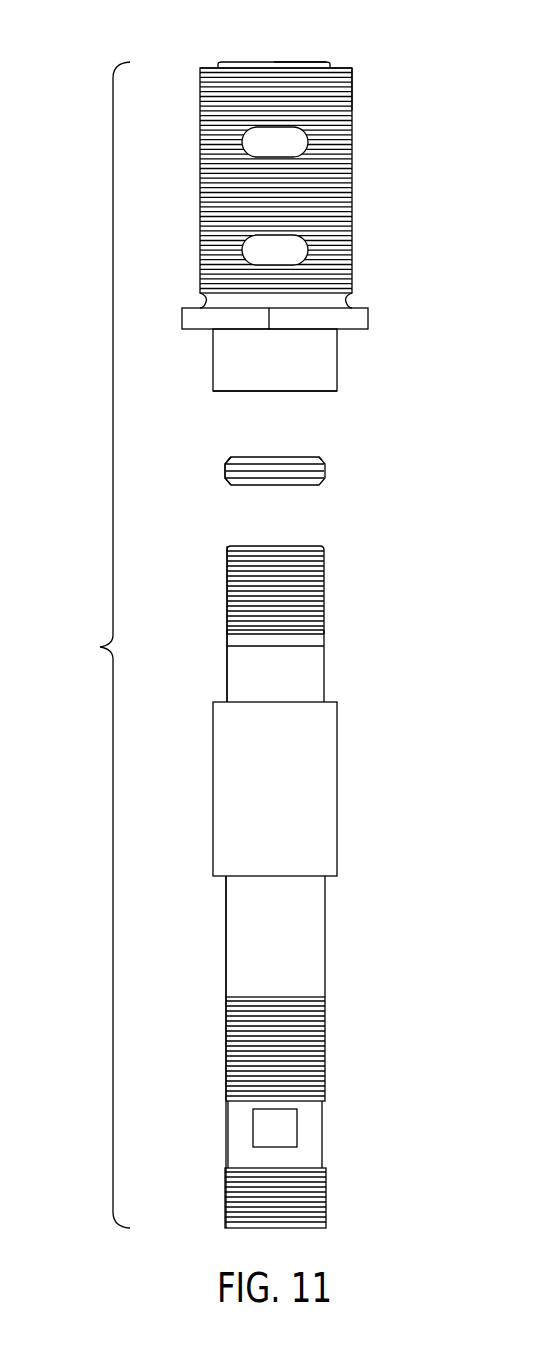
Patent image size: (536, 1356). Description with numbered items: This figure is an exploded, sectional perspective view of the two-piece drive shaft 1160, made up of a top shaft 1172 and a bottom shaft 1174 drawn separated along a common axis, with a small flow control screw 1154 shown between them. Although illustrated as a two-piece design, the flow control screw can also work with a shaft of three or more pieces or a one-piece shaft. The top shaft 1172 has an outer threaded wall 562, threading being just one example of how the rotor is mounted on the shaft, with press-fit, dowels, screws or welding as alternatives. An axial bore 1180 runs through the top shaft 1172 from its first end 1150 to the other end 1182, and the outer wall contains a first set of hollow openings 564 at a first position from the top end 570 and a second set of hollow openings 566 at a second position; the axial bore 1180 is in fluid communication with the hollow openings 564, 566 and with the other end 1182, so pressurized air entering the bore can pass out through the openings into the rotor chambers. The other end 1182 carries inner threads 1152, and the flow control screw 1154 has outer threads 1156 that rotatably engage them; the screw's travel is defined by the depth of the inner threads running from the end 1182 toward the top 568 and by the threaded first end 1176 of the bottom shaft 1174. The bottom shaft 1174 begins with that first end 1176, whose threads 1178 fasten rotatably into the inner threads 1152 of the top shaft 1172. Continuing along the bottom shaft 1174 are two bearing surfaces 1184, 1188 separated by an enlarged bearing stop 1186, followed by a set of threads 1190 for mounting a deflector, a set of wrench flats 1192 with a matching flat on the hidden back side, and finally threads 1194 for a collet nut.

The first end 1150 is at (342, 68).
The inner threads 1152 is at (293, 393).
The flow control screw 1154 is at (325, 470).
The outer threads 1156 is at (225, 470).
The two-piece drive shaft 1160 is at (85, 645).
The top shaft 1172 is at (200, 182).
The bottom shaft 1174 is at (226, 908).
The first end 1176 is at (324, 629).
The threads 1178 is at (324, 565).
The axial bore 1180 is at (258, 62).
The other end 1182 is at (257, 393).
The bearing surface 1184 is at (324, 672).
The bearing stop 1186 is at (337, 789).
The bearing surface 1188 is at (325, 928).
The lower threaded portion 1190 is at (325, 1045).
The wrench flats 1192 is at (297, 1128).
The threads 1194 is at (326, 1200).
The outer threaded wall 562 is at (352, 83).
The hollow openings 564 is at (308, 142).
The hollow openings 566 is at (308, 252).
The shaft end 568 is at (296, 62).
The top end 570 is at (368, 318).